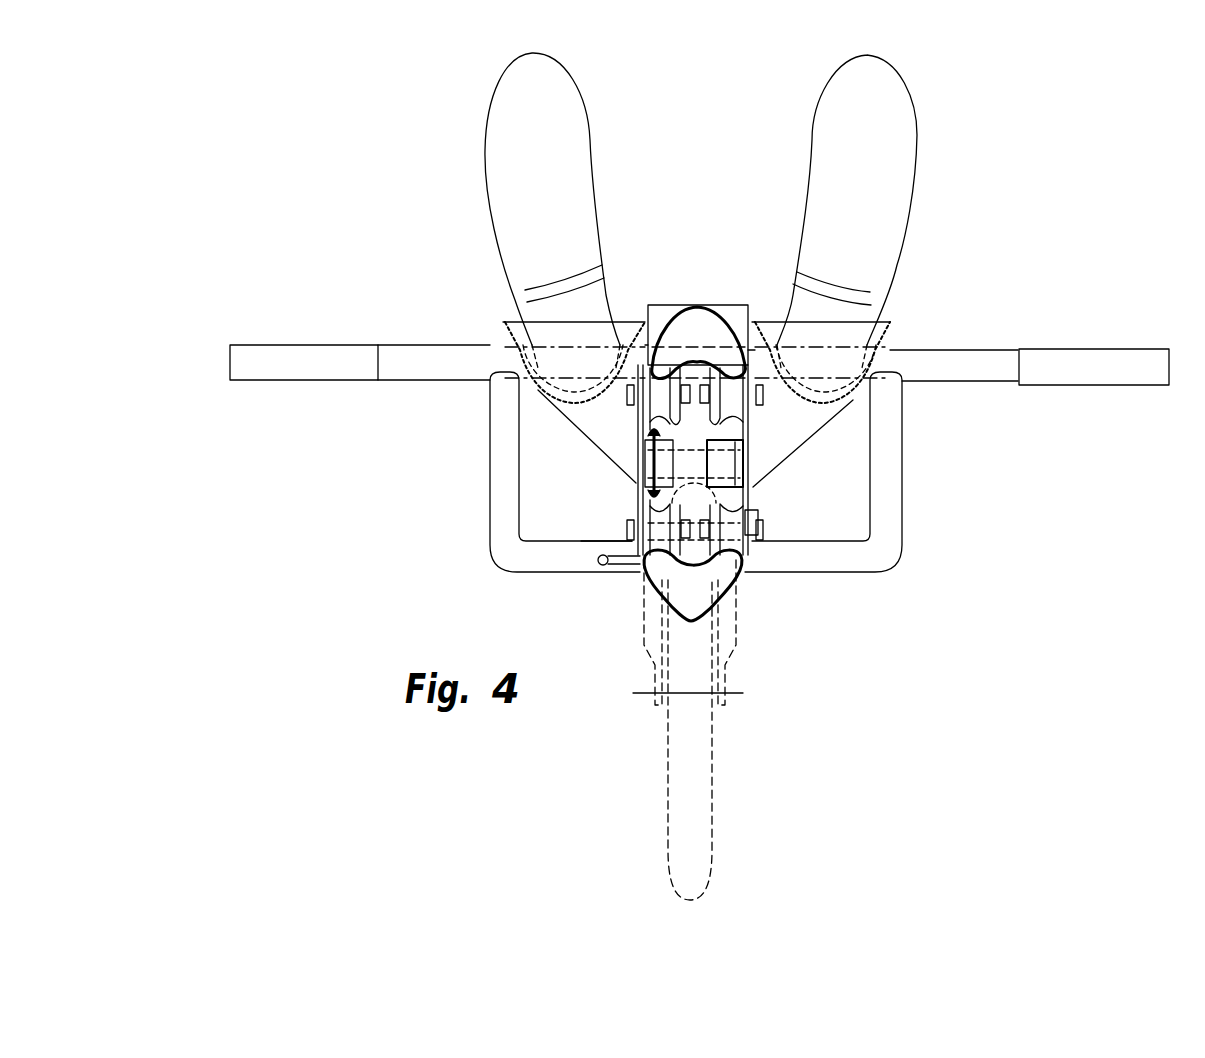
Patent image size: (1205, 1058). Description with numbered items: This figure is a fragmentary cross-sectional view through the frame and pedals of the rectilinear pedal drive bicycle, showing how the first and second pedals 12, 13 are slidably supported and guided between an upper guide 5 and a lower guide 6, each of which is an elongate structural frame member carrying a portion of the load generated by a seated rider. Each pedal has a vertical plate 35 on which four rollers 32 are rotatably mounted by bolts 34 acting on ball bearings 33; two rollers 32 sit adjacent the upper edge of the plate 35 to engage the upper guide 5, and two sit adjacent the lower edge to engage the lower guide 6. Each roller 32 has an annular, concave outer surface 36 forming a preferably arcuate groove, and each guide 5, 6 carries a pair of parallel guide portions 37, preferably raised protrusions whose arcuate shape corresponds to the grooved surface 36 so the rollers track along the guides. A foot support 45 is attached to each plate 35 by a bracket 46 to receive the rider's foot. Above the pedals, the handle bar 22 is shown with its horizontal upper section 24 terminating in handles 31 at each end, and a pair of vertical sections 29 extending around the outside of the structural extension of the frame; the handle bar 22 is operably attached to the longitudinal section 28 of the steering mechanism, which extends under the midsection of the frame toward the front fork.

The upper guide 5 is at (724, 310).
The lower guide 6 is at (720, 598).
The first pedal 12 is at (662, 222).
The second pedal 13 is at (768, 215).
The handle bar 22 is at (900, 409).
The horizontal upper section 24 is at (945, 348).
The longitudinal section 28 is at (600, 565).
The vertical sections 29 is at (488, 468).
The handles 31 is at (290, 344).
The rollers 32 is at (642, 420).
The ball bearings 33 is at (660, 525).
The bolts 34 is at (762, 535).
The vertical plate 35 is at (635, 447).
The annular concave outer surface 36 is at (820, 460).
The guide portions 37 is at (640, 406).
The foot support 45 is at (507, 322).
The bracket 46 is at (646, 386).